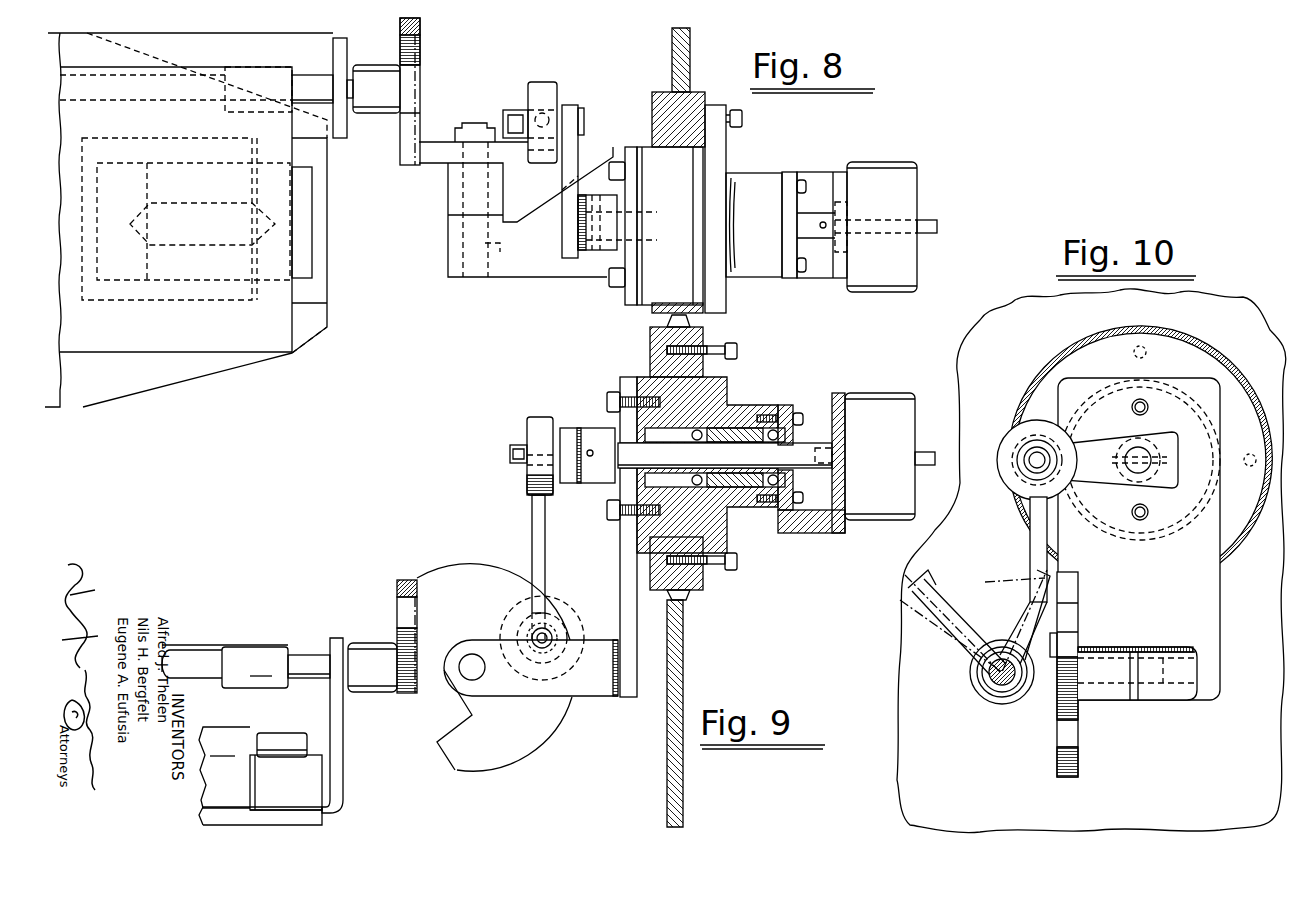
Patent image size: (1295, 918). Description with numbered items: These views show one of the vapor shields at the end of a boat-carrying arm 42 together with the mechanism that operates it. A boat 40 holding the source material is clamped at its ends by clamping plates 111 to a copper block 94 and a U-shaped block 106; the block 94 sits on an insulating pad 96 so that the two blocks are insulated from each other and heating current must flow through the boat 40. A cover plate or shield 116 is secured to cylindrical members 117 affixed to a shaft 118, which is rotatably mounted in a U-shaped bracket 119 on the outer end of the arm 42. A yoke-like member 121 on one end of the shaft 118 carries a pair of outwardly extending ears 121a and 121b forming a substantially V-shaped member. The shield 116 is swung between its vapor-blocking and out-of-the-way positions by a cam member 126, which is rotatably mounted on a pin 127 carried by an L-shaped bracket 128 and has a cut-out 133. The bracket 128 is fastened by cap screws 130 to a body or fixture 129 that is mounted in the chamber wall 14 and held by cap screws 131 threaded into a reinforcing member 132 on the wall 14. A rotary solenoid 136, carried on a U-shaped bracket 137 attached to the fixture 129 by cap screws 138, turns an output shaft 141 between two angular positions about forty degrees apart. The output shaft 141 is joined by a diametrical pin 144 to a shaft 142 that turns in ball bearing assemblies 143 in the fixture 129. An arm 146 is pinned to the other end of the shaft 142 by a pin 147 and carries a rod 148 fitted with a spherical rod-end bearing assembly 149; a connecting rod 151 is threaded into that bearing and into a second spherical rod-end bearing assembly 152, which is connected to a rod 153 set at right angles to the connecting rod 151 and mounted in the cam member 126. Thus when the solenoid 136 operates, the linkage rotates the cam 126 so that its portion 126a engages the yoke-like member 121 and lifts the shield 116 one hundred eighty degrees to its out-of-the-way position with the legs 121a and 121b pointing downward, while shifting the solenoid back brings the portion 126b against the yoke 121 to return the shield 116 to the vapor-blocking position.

In FIG. 8, the wall 14 is at (684, 50).
In FIG. 9, the wall 14 is at (684, 692).
In FIG. 10, the wall 14 is at (1162, 789).
In FIG. 8, the boat 40 is at (205, 247).
In FIG. 8, the arm 42 is at (125, 387).
In FIG. 9, the arm 42 is at (322, 817).
In FIG. 8, the block 94 is at (322, 306).
In FIG. 9, the block 94 is at (312, 778).
In FIG. 9, the insulating pad 96 is at (282, 810).
In FIG. 8, the U-shaped block 106 is at (118, 300).
In FIG. 9, the U-shaped block 106 is at (224, 767).
In FIG. 8, the clamping plate 111 is at (312, 222).
In FIG. 9, the clamping plate 111 is at (295, 710).
In FIG. 8, the cover plate 116 is at (272, 355).
In FIG. 9, the cover plate 116 is at (197, 645).
In FIG. 8, the cylindrical member 117 is at (228, 110).
In FIG. 9, the cylindrical member 117 is at (225, 666).
In FIG. 8, the shaft 118 is at (316, 75).
In FIG. 9, the shaft 118 is at (310, 655).
In FIG. 10, the shaft 118 is at (980, 690).
In FIG. 8, the U-shaped bracket 119 is at (345, 50).
In FIG. 9, the U-shaped bracket 119 is at (344, 749).
In FIG. 8, the yoke-like member 121 is at (377, 124).
In FIG. 9, the yoke-like member 121 is at (376, 694).
In FIG. 8, the ear 121a is at (420, 22).
In FIG. 8, the ear 121b is at (410, 160).
In FIG. 9, the ear 121b is at (400, 586).
In FIG. 10, the ear 121b is at (1032, 580).
In FIG. 9, the cam member 126 is at (548, 721).
In FIG. 10, the cam member 126 is at (1052, 741).
In FIG. 8, the portion of cam member 126a is at (452, 172).
In FIG. 9, the portion of cam member 126a is at (405, 612).
In FIG. 10, the portion of cam member 126a is at (1070, 615).
In FIG. 9, the portion of cam member 126b is at (455, 757).
In FIG. 10, the portion of cam member 126b is at (1078, 763).
In FIG. 8, the pin 127 is at (500, 257).
In FIG. 9, the pin 127 is at (467, 674).
In FIG. 10, the pin 127 is at (1118, 692).
In FIG. 8, the L-shaped bracket 128 is at (553, 290).
In FIG. 9, the L-shaped bracket 128 is at (603, 693).
In FIG. 10, the L-shaped bracket 128 is at (1184, 618).
In FIG. 8, the body 129 is at (680, 275).
In FIG. 9, the body 129 is at (714, 526).
In FIG. 10, the body 129 is at (1190, 522).
In FIG. 8, the cap screw 130 is at (613, 162).
In FIG. 9, the cap screw 130 is at (607, 400).
In FIG. 10, the cap screw 130 is at (1150, 405).
In FIG. 8, the cap screw 131 is at (742, 117).
In FIG. 9, the cap screw 131 is at (738, 351).
In FIG. 10, the cap screw 131 is at (1148, 349).
In FIG. 8, the reinforcing member 132 is at (703, 102).
In FIG. 9, the reinforcing member 132 is at (637, 590).
In FIG. 10, the reinforcing member 132 is at (1106, 363).
In FIG. 9, the cut-out 133 is at (440, 742).
In FIG. 10, the cut-out 133 is at (1075, 733).
In FIG. 8, the rotary solenoid 136 is at (890, 266).
In FIG. 9, the rotary solenoid 136 is at (886, 491).
In FIG. 8, the U-shaped bracket 137 is at (820, 172).
In FIG. 9, the U-shaped bracket 137 is at (812, 534).
In FIG. 8, the cap screw 138 is at (802, 180).
In FIG. 9, the cap screw 138 is at (812, 491).
In FIG. 8, the output shaft 141 is at (926, 225).
In FIG. 9, the output shaft 141 is at (858, 452).
In FIG. 9, the shaft 142 is at (744, 462).
In FIG. 10, the shaft 142 is at (1145, 472).
In FIG. 9, the ball bearing assembly 143 is at (765, 415).
In FIG. 8, the pin 144 is at (820, 224).
In FIG. 9, the pin 144 is at (812, 448).
In FIG. 8, the arm 146 is at (574, 105).
In FIG. 9, the arm 146 is at (592, 480).
In FIG. 10, the arm 146 is at (1103, 480).
In FIG. 8, the pin 147 is at (588, 224).
In FIG. 9, the pin 147 is at (591, 450).
In FIG. 10, the pin 147 is at (1127, 440).
In FIG. 8, the rod 148 is at (565, 105).
In FIG. 9, the rod 148 is at (547, 500).
In FIG. 10, the rod 148 is at (1025, 452).
In FIG. 8, the spherical rod-end bearing assembly 149 is at (548, 74).
In FIG. 10, the spherical rod-end bearing assembly 149 is at (997, 493).
In FIG. 8, the connecting rod 151 is at (540, 100).
In FIG. 9, the connecting rod 151 is at (533, 515).
In FIG. 10, the connecting rod 151 is at (1030, 535).
In FIG. 8, the spherical rod-end bearing assembly 152 is at (590, 106).
In FIG. 9, the spherical rod-end bearing assembly 152 is at (571, 604).
In FIG. 10, the spherical rod-end bearing assembly 152 is at (1035, 692).
In FIG. 9, the rod 153 is at (548, 636).
In FIG. 10, the rod 153 is at (1057, 640).